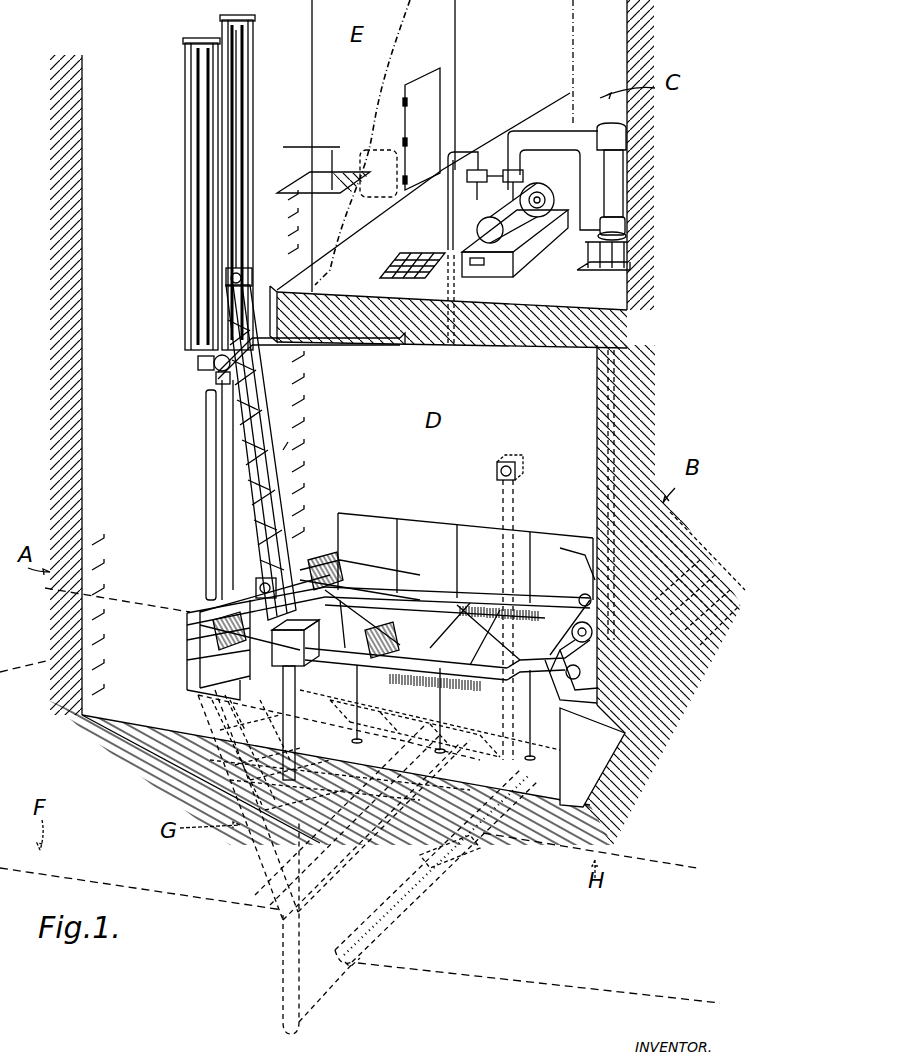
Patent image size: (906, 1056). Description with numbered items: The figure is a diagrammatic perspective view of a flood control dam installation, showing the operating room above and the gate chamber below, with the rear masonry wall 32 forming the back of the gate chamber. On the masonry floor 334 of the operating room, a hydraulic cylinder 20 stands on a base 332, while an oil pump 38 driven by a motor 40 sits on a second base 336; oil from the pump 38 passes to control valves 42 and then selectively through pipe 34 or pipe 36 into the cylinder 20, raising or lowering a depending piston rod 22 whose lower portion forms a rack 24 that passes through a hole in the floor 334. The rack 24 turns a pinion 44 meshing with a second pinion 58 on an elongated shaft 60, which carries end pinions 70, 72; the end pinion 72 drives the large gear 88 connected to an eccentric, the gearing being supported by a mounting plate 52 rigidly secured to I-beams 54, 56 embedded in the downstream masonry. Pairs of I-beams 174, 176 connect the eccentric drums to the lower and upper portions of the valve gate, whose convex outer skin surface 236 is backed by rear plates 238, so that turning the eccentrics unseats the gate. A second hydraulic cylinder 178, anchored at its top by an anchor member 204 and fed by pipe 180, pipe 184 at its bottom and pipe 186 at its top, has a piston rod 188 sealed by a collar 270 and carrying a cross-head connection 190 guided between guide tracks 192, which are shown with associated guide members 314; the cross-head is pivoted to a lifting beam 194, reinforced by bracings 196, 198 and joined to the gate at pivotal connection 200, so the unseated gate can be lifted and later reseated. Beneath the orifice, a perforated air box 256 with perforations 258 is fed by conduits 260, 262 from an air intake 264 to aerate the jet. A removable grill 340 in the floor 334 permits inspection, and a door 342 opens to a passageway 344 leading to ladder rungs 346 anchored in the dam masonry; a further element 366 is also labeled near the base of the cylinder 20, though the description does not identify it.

The hydraulic cylinder 20 is at (612, 178).
The piston rod 22 is at (607, 398).
The rack 24 is at (604, 513).
The rear masonry wall 32 is at (596, 420).
The pipe 34 is at (560, 190).
The pipe 36 is at (546, 131).
The oil pump 38 is at (515, 255).
The motor 40 is at (545, 215).
The control valves 42 is at (476, 170).
The pinion 44 is at (574, 559).
The mounting plate 52 is at (630, 733).
The I-beam 54 is at (712, 560).
The I-beam 56 is at (720, 590).
The second pinion 58 is at (584, 595).
The elongated shaft 60 is at (575, 630).
The end pinion 70 is at (520, 662).
The end pinion 72 is at (640, 570).
The large gear 88 is at (672, 578).
The I-beams 174 is at (443, 760).
The I-beams 176 is at (440, 592).
The hydraulic cylinder 178 is at (206, 512).
The pipe 180 is at (462, 212).
The pipe 184 is at (220, 449).
The pipe 186 is at (343, 340).
The piston rod 188 is at (197, 363).
The cross-head connection 190 is at (235, 276).
The guide tracks 192 is at (186, 97).
The lifting beam 194 is at (245, 475).
The bracing 196 is at (255, 420).
The bracing 198 is at (288, 450).
The pivotal connection 200 is at (258, 590).
The anchor member 204 is at (214, 368).
The outer metallic skin surface 236 is at (190, 690).
The rear plates 238 is at (215, 705).
The perforated air box 256 is at (424, 898).
The perforations 258 is at (463, 852).
The conduit 260 is at (283, 942).
The conduit 262 is at (502, 512).
The air intake 264 is at (497, 470).
The collar 270 is at (193, 391).
The guide rail 314 is at (200, 70).
The base 332 is at (627, 245).
The masonry floor 334 is at (480, 338).
The base 336 is at (488, 278).
The removable grill 340 is at (418, 256).
The door 342 is at (420, 110).
The passageway 344 is at (338, 138).
The ladder rungs 346 is at (285, 175).
The collar 366 is at (625, 230).